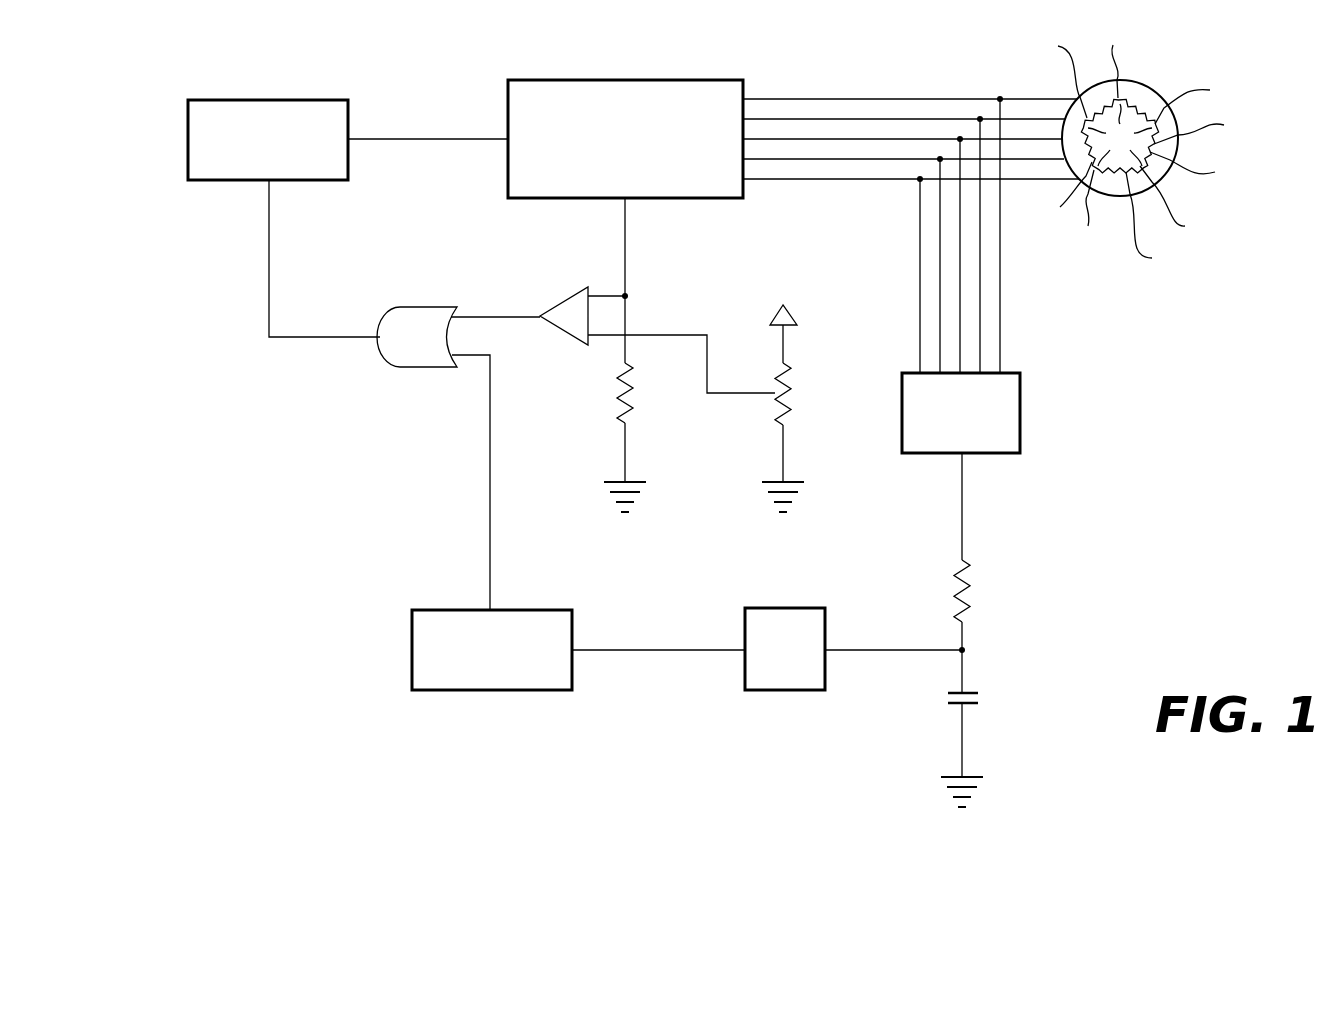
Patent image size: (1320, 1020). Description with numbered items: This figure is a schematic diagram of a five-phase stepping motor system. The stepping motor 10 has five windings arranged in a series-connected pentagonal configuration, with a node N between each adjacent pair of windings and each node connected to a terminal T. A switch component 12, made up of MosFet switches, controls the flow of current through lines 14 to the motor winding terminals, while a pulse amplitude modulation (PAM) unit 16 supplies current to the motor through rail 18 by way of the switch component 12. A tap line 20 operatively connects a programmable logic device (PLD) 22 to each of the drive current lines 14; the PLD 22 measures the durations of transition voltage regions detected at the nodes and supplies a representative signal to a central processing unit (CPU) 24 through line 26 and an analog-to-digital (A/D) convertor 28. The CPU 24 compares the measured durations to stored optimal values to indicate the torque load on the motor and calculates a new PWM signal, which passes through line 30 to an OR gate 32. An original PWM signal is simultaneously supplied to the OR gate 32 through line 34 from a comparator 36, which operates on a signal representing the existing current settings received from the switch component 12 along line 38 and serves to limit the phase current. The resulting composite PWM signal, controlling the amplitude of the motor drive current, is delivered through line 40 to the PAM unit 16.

The stepping motor 10 is at (1148, 80).
The switch component 12 is at (652, 78).
The lines 14 is at (827, 120).
The pulse amplitude modulation (PAM) unit 16 is at (248, 100).
The rail 18 is at (462, 139).
The tap line 20 is at (916, 352).
The programmable logic device (PLD) 22 is at (990, 455).
The central processing unit (CPU) 24 is at (412, 652).
The line 26 is at (888, 650).
The analog-to-digital (A/D) convertor 28 is at (745, 624).
The line 30 is at (488, 540).
The OR gate 32 is at (385, 356).
The line 34 is at (490, 316).
The comparator 36 is at (567, 326).
The line 38 is at (627, 260).
The line 40 is at (268, 250).